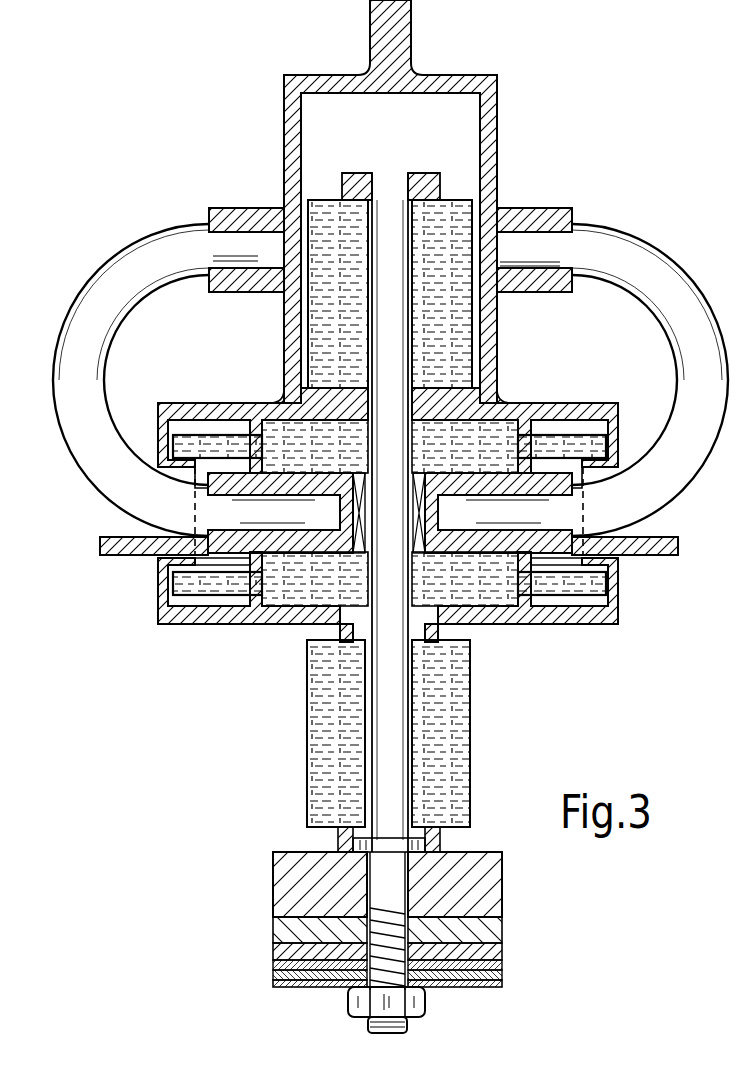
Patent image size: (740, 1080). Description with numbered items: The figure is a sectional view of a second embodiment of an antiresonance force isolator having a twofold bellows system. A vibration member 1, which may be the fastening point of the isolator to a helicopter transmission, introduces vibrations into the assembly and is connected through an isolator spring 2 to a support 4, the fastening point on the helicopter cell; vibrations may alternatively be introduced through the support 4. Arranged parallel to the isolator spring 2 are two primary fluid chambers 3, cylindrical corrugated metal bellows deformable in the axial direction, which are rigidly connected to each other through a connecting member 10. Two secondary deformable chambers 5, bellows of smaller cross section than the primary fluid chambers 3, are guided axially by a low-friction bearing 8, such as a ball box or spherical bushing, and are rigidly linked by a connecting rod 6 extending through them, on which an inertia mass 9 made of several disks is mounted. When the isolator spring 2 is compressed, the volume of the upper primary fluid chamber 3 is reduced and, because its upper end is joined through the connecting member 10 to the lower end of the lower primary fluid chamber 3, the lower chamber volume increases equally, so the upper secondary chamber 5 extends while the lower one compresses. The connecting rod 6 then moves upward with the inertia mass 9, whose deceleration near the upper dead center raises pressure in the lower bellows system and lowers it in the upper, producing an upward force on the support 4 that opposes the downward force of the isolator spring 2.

The vibration member 1 is at (292, 127).
The isolator spring 2 is at (153, 252).
The primary fluid chamber 3 is at (185, 445).
The support 4 is at (108, 553).
The secondary deformable chamber 5 is at (328, 320).
The connecting rod 6 is at (380, 760).
The bearing 8 is at (352, 552).
The inertia mass 9 is at (273, 900).
The connecting member 10 is at (180, 403).